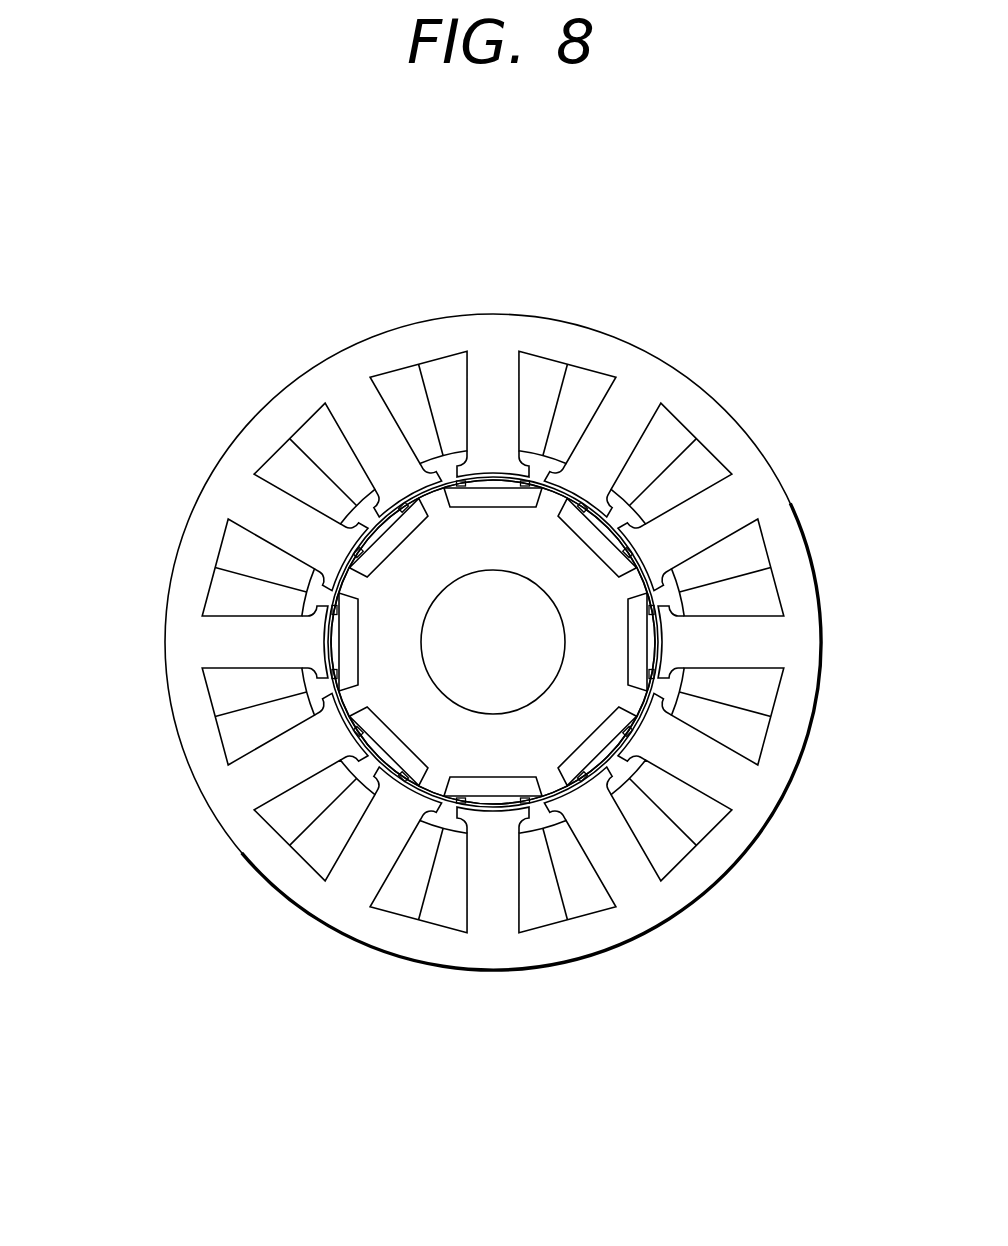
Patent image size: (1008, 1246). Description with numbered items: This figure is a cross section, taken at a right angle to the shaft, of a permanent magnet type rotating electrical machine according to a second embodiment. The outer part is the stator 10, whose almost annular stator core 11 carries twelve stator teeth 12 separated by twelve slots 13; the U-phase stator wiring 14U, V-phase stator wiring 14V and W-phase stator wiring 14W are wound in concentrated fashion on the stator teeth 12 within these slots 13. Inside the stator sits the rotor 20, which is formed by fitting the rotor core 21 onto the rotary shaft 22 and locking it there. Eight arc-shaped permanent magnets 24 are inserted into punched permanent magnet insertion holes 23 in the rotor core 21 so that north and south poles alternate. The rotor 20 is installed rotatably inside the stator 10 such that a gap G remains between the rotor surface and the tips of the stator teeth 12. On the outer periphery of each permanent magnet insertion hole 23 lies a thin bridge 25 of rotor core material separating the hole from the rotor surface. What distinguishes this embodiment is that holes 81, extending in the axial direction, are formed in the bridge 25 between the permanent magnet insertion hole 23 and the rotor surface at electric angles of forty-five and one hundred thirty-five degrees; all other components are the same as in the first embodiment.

The stator 10 is at (478, 648).
The stator core 11 is at (235, 492).
The stator teeth 12 is at (363, 400).
The slots 13 is at (212, 735).
The U-phase stator wiring 14U is at (455, 378).
The V-phase stator wiring 14V is at (590, 380).
The W-phase stator wiring 14W is at (313, 437).
The rotor 20 is at (515, 657).
The rotor core 21 is at (490, 530).
The rotary shaft 22 is at (514, 683).
The permanent magnet insertion holes 23 is at (496, 803).
The permanent magnets 24 is at (613, 552).
The bridge 25 is at (380, 757).
The holes 81 is at (662, 668).
The gap G is at (505, 472).